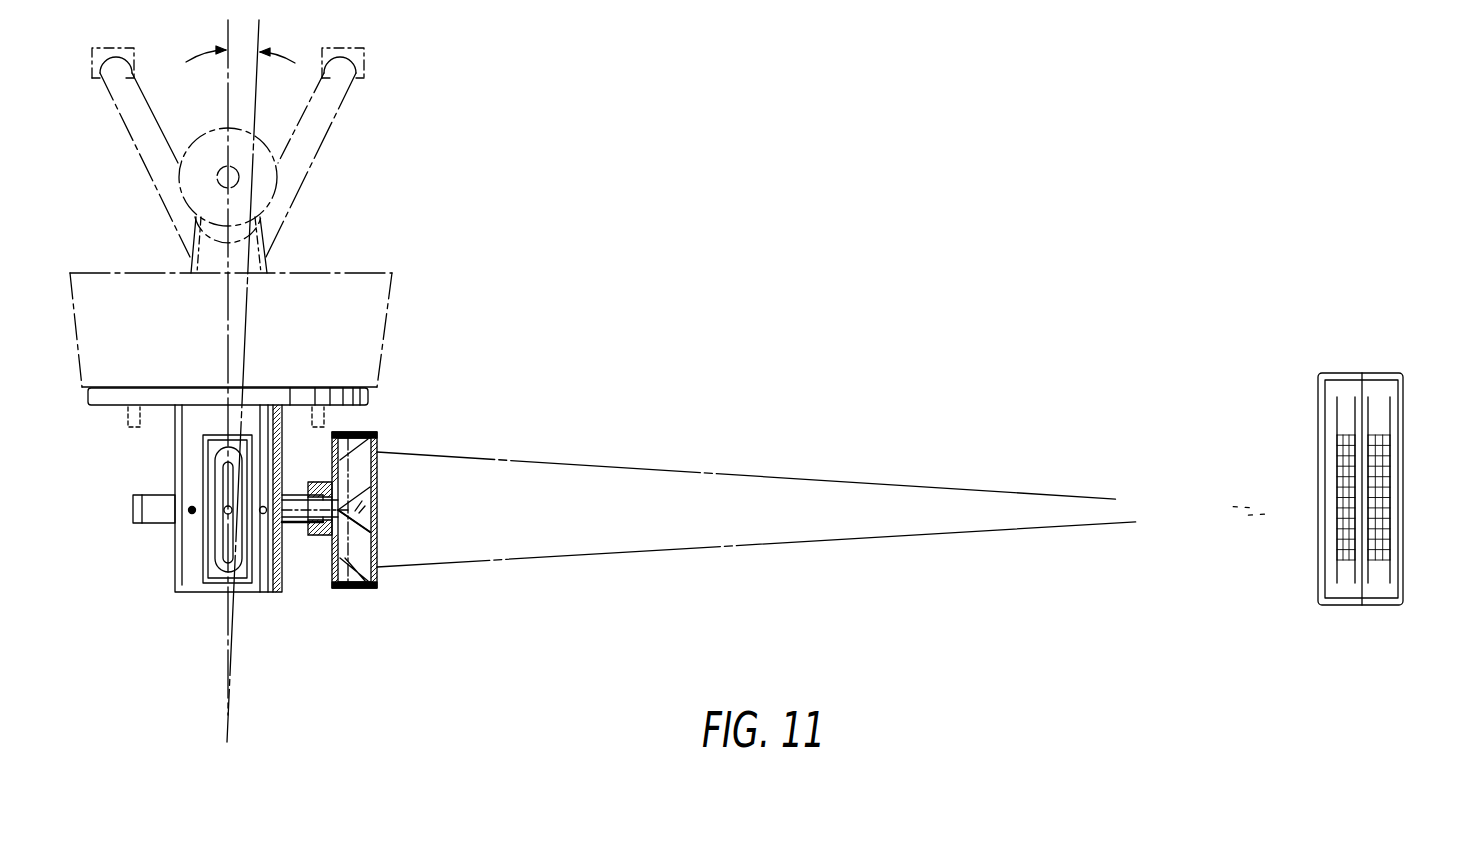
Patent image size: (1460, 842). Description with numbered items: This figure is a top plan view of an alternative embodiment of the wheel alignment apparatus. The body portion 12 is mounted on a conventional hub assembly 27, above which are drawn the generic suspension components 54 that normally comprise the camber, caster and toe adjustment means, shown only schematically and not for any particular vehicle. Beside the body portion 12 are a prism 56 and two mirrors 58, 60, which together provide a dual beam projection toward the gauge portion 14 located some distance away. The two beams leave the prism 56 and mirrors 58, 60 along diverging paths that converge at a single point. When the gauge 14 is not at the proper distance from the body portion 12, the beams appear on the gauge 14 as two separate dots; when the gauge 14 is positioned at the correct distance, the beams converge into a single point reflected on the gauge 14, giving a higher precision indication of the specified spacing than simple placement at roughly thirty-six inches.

The suspension components 54 is at (327, 168).
The hub assembly 27 is at (352, 318).
The body portion 12 is at (176, 591).
The mirror 58 is at (375, 444).
The prism 56 is at (377, 500).
The mirror 60 is at (346, 589).
The gauge portion 14 is at (1400, 578).